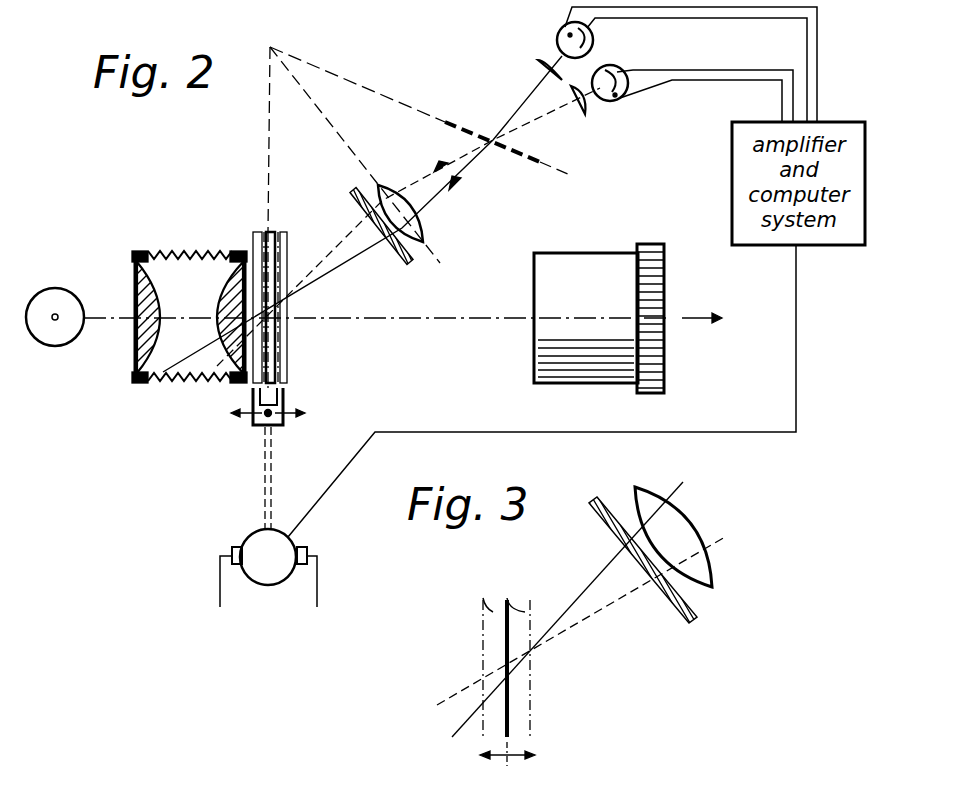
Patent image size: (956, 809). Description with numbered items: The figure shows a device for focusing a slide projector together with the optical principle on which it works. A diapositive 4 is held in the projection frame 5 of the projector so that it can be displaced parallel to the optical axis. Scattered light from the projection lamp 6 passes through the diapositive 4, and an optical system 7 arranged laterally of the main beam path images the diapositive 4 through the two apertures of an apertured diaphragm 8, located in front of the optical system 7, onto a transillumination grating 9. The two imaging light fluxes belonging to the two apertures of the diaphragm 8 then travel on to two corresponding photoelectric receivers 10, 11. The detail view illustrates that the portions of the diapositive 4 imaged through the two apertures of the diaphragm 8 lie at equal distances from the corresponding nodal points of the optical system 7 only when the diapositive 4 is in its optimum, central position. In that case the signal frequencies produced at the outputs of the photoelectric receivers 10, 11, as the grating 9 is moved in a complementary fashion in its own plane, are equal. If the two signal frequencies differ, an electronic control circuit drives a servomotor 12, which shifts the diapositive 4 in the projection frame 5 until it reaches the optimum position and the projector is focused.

In FIG. 2, the diapositive 4 is at (270, 362).
In FIG. 3, the diapositive 4 is at (508, 600).
In FIG. 2, the projection frame 5 is at (239, 436).
In FIG. 2, the projection lamp 6 is at (52, 300).
In FIG. 2, the optical system 7 is at (393, 186).
In FIG. 3, the optical system 7 is at (680, 532).
In FIG. 2, the apertured diaphragm 8 is at (353, 190).
In FIG. 3, the apertured diaphragm 8 is at (637, 560).
In FIG. 2, the transillumination grating 9 is at (518, 152).
In FIG. 2, the photoelectric receiver 10 is at (558, 40).
In FIG. 2, the photoelectric receiver 11 is at (608, 100).
In FIG. 2, the servomotor 12 is at (273, 582).